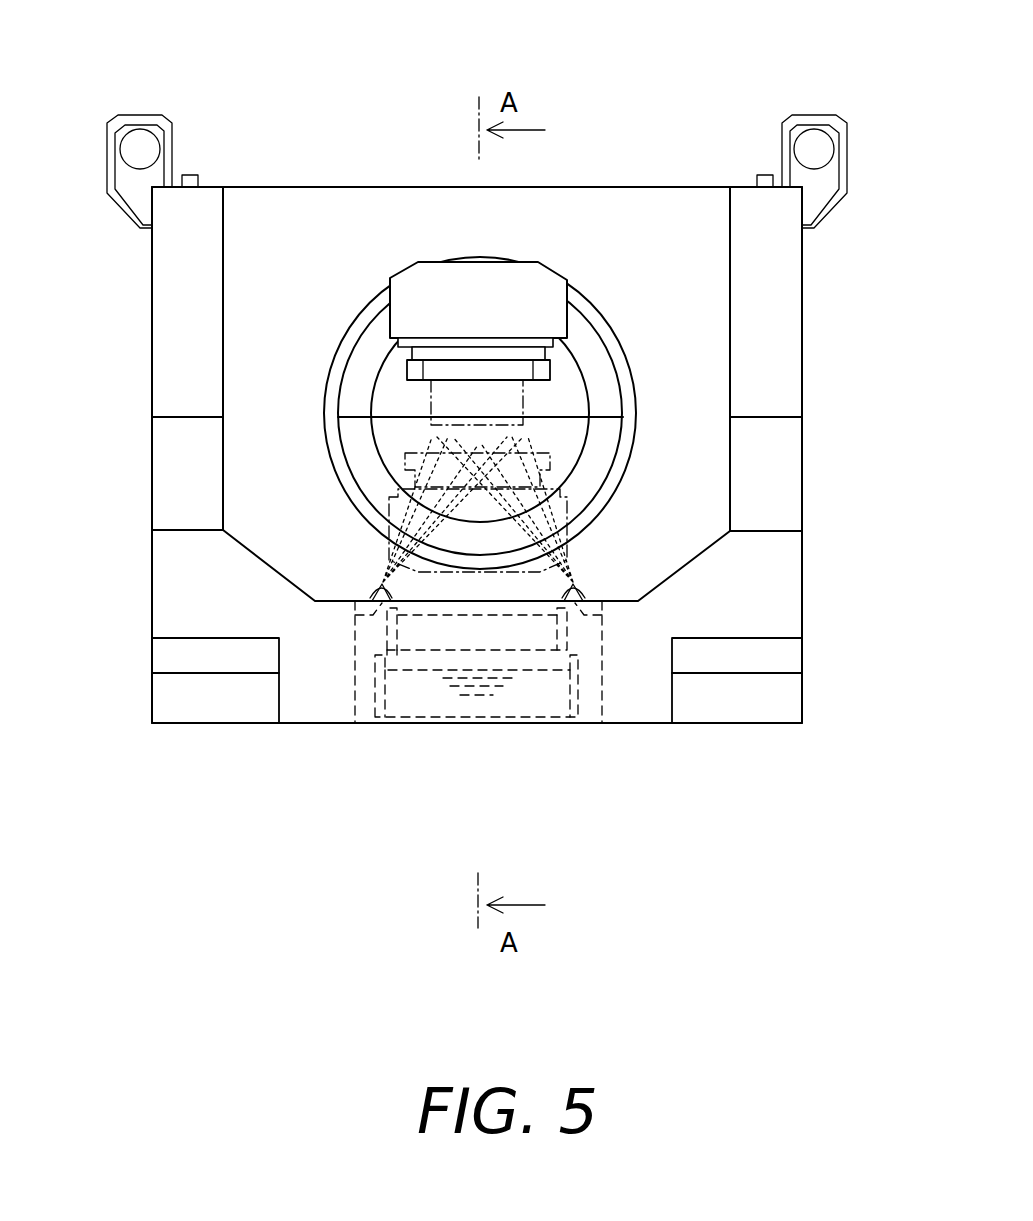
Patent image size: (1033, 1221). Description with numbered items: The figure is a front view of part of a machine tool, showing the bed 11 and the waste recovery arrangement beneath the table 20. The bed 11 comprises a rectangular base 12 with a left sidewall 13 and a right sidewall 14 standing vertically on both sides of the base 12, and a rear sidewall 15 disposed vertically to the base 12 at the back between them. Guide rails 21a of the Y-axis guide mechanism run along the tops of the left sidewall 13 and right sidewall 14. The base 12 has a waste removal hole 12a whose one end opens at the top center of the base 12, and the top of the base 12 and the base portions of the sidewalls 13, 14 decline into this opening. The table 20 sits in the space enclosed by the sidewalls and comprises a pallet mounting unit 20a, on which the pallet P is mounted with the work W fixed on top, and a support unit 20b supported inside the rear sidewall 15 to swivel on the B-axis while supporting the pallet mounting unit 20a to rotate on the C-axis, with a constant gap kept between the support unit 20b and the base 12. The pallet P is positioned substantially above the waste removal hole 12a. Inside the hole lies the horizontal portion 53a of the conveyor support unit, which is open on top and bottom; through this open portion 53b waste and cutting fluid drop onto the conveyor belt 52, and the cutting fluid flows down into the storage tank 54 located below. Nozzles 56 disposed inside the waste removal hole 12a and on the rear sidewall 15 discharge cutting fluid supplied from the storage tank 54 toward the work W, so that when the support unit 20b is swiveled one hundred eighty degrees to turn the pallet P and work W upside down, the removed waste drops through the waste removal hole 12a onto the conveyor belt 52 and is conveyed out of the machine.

The bed 11 is at (242, 757).
The base 12 is at (320, 725).
The waste removal hole 12a is at (602, 693).
The left sidewall 13 is at (152, 338).
The right sidewall 14 is at (800, 306).
The rear sidewall 15 is at (677, 212).
The table 20 is at (545, 230).
The pallet mounting unit 20a is at (410, 350).
The support unit 20b is at (448, 275).
The guide rails 21a is at (190, 175).
The conveyor belt 52 is at (433, 650).
The horizontal portion 53a is at (572, 632).
The open portion 53b is at (532, 603).
The storage tank 54 is at (387, 655).
The nozzles 56 is at (373, 593).
The pallet P is at (547, 370).
The work W is at (518, 403).